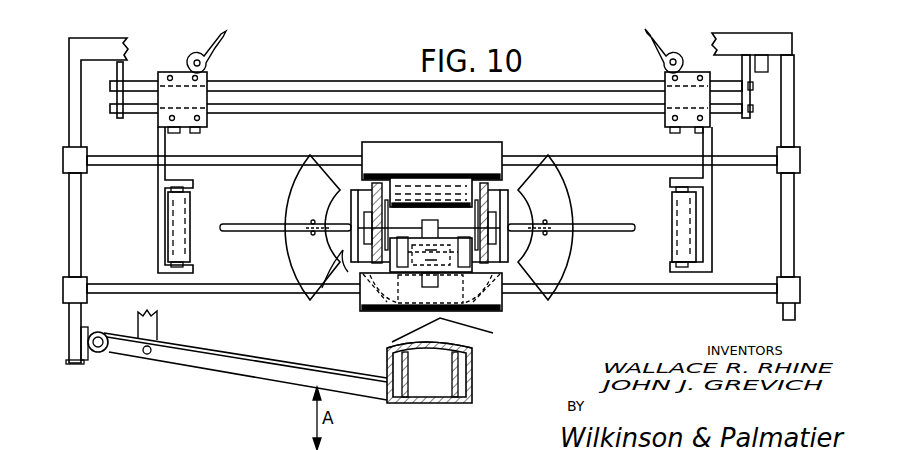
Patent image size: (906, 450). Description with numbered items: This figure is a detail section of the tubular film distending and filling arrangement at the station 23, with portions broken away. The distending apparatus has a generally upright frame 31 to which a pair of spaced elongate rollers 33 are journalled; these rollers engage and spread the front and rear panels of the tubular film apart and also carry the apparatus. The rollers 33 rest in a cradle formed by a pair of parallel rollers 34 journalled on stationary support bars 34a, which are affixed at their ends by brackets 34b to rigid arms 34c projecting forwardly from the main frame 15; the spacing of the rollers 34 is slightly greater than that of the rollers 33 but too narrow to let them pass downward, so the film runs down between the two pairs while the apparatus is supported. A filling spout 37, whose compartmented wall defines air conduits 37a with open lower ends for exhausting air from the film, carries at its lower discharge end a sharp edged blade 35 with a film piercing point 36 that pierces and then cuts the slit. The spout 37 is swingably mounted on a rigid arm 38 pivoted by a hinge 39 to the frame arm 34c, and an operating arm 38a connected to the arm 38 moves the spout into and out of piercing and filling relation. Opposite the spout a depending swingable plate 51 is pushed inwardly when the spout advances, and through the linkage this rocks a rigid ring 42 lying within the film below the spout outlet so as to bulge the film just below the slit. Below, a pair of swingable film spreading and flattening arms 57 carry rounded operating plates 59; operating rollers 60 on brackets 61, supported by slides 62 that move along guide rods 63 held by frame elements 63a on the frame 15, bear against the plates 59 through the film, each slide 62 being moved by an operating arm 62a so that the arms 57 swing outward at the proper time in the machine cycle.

The frame 15 is at (755, 40).
The station 23 is at (535, 337).
The upright frame 31 is at (483, 176).
The elongate rollers 33 is at (421, 178).
The rollers 34 is at (497, 145).
The stationary support bars 34a is at (582, 162).
The brackets 34b is at (63, 162).
The rigid arms 34c is at (73, 228).
The sharp edged blade 35 is at (468, 340).
The film piercing point 36 is at (454, 330).
The filling spout 37 is at (457, 403).
The air conduits 37a is at (460, 380).
The rigid arm 38 is at (290, 375).
The operating arm 38a is at (158, 330).
The hinge 39 is at (97, 351).
The rigid ring 42 is at (348, 272).
The swingable plate 51 is at (427, 300).
The film spreading and flattening arms 57 is at (280, 229).
The operating plates 59 is at (297, 247).
The operating rollers 60 is at (185, 218).
The brackets 61 is at (157, 192).
The slides 62 is at (207, 78).
The operating arm 62a is at (213, 55).
The guide rods 63 is at (355, 107).
The frame elements 63a is at (750, 98).